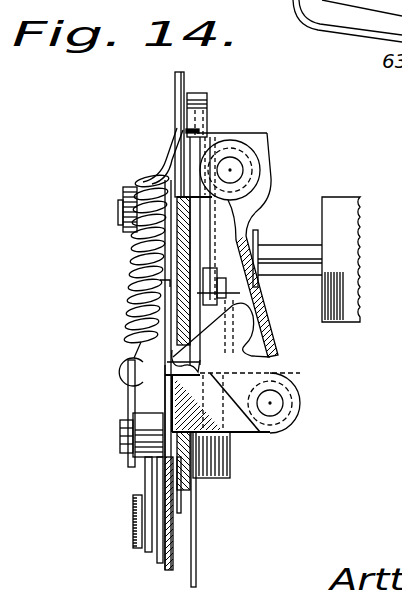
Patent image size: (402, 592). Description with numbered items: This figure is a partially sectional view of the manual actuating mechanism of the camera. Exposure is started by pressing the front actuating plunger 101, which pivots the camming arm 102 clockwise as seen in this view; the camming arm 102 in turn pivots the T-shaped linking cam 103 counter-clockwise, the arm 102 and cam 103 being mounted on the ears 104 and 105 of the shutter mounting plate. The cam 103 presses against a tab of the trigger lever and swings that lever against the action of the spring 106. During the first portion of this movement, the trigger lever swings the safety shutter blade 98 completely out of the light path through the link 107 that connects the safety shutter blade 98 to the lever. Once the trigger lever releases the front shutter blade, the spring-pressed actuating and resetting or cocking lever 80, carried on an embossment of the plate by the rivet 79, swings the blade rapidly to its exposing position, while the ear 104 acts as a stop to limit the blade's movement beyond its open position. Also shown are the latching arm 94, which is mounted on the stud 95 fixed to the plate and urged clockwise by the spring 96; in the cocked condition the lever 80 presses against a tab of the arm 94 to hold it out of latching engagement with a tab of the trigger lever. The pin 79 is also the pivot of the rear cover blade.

The pin 79 is at (230, 467).
The actuating and resetting or cocking lever 80 is at (197, 545).
The latching arm 94 is at (150, 471).
The stud 95 is at (133, 522).
The spring 96 is at (145, 478).
The safety shutter blade 98 is at (130, 240).
The front actuating plunger 101 is at (336, 322).
The camming arm 102 is at (268, 178).
The T-shaped linking cam 103 is at (268, 357).
The ear 104 is at (199, 133).
The ear 105 is at (247, 435).
The spring 106 is at (120, 320).
The link 107 is at (128, 409).